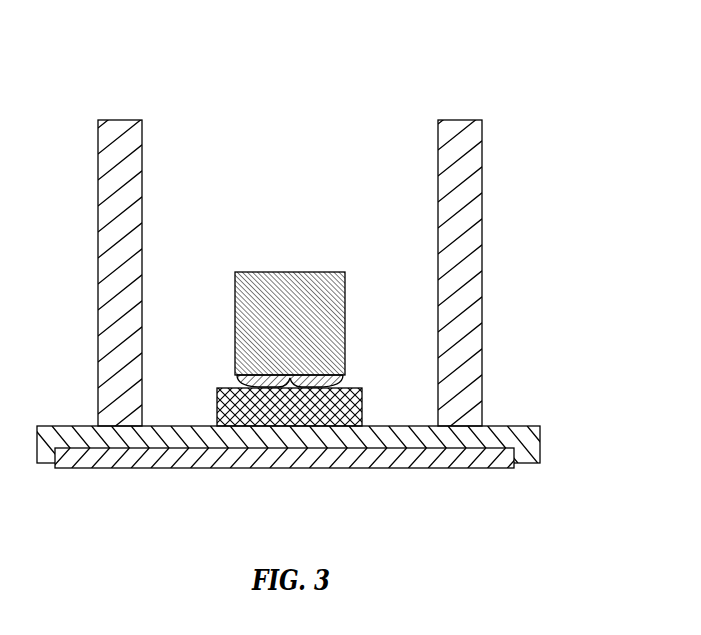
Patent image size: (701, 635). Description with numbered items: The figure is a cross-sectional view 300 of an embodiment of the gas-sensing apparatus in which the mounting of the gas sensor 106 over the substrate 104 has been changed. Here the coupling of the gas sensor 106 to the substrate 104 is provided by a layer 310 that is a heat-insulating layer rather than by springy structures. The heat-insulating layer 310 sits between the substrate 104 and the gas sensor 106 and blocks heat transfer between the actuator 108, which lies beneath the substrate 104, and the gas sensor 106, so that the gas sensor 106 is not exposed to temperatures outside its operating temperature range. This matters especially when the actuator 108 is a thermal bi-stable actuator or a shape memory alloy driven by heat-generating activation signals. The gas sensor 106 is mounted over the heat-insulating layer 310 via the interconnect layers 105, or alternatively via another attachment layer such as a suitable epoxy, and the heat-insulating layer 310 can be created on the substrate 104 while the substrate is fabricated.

The cross-sectional view 300 is at (48, 104).
The substrate 104 is at (540, 446).
The actuator 108 is at (283, 470).
The heat-insulating layer 310 is at (348, 388).
The gas sensor 106 is at (235, 326).
The interconnect layers 105 is at (237, 381).